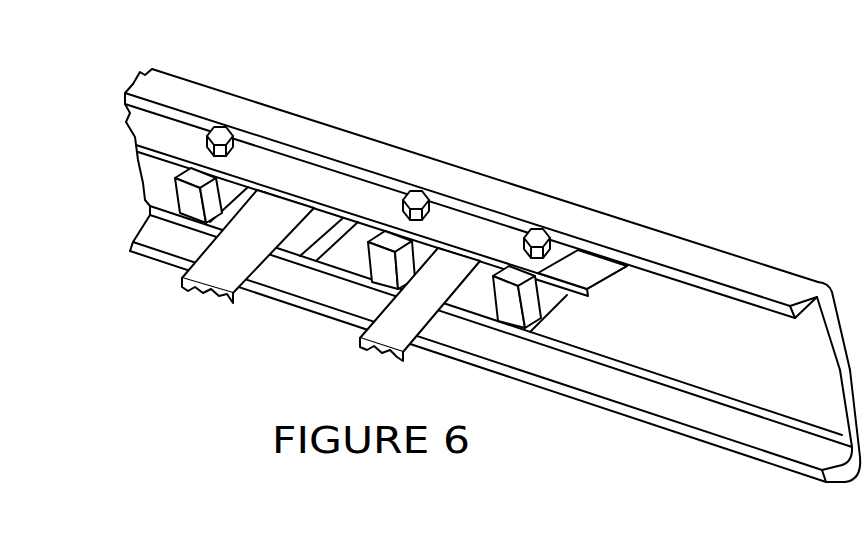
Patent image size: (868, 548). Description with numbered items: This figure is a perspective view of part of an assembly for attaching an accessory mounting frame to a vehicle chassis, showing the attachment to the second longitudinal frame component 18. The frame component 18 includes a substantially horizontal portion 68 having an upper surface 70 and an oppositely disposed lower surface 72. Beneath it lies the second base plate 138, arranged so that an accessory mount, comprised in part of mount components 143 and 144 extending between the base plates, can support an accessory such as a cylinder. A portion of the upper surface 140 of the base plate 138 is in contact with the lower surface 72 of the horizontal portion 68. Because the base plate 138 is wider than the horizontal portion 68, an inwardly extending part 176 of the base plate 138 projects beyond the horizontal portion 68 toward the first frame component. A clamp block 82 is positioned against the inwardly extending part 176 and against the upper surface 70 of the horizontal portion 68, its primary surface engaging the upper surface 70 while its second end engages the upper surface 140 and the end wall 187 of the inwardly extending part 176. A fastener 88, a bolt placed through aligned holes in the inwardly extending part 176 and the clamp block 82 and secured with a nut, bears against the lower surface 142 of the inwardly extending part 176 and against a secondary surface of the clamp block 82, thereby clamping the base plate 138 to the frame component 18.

The second longitudinal frame component 18 is at (676, 228).
The horizontal portion 68 is at (733, 298).
The upper surface 70 is at (758, 268).
The lower surface 72 is at (801, 328).
The clamp block 82 is at (364, 268).
The fastener 88 is at (408, 191).
The second base plate 138 is at (308, 177).
The upper surface 140 is at (457, 242).
The lower surface 142 is at (603, 300).
The mount component 143 is at (248, 246).
The mount component 144 is at (420, 304).
The inwardly extending part 176 is at (597, 280).
The end wall 187 is at (573, 300).